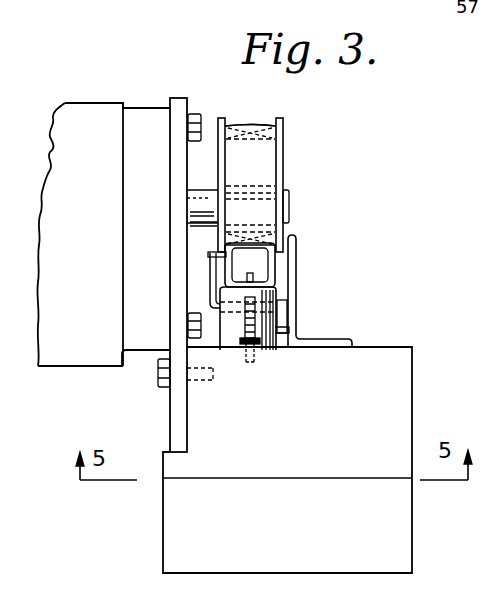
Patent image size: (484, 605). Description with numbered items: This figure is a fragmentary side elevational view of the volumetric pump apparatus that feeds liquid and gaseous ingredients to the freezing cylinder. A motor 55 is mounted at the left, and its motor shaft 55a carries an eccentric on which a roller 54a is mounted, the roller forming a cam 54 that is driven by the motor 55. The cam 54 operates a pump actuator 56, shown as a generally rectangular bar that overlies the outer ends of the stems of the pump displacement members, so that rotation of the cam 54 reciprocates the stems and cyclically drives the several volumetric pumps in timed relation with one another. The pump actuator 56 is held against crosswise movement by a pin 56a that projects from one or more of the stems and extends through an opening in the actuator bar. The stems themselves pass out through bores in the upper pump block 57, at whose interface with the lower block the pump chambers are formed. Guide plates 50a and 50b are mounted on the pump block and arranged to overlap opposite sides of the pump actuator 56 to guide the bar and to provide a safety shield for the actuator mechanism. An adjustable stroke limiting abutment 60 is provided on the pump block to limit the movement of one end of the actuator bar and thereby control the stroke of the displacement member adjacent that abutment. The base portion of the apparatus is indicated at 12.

The housing base 12 is at (162, 525).
The guide plate 50a is at (296, 293).
The guide plate 50b is at (210, 280).
The cam 54 is at (287, 153).
The roller 54a is at (258, 126).
The motor 55 is at (100, 113).
The motor shaft 55a is at (197, 203).
The pump actuator 56 is at (225, 258).
The pin 56a is at (254, 276).
The upper pump block 57 is at (393, 382).
The adjustable stroke limiting abutment 60 is at (247, 323).